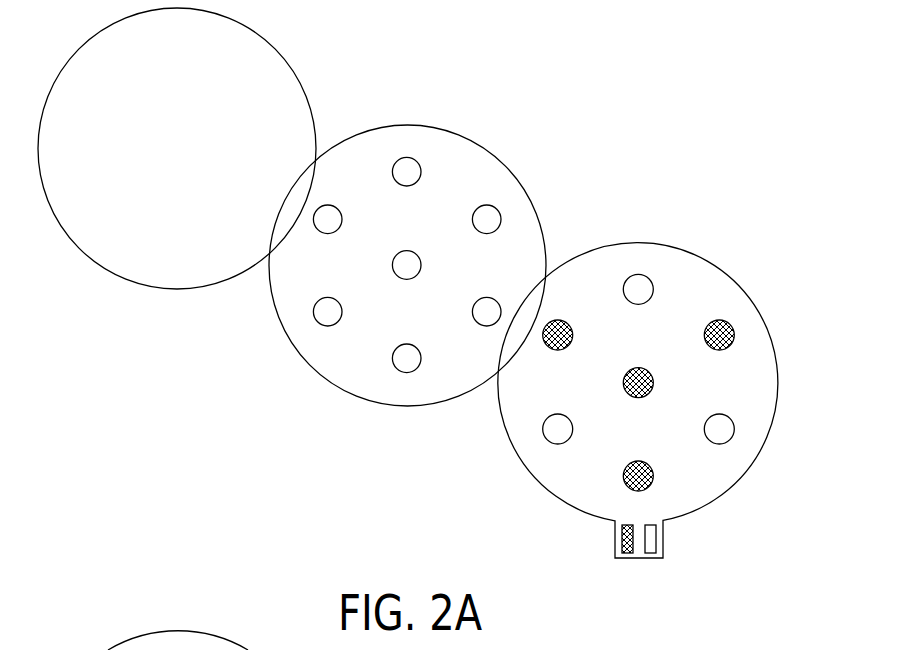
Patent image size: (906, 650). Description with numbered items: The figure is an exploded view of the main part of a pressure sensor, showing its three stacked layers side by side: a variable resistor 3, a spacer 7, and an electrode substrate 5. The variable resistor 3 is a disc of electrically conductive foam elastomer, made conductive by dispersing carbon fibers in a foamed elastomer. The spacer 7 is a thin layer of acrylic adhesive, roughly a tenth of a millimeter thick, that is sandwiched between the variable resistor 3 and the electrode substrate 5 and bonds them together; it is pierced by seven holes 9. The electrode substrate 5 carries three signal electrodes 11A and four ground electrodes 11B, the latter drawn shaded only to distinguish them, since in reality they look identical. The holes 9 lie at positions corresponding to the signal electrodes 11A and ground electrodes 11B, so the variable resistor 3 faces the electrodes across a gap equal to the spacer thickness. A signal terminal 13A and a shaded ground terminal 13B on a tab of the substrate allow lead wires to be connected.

The variable resistor 3 is at (121, 277).
The electrode substrate 5 is at (568, 505).
The spacer 7 is at (353, 396).
The holes 9 is at (407, 172).
The signal electrodes 11A is at (638, 289).
The ground electrodes 11B is at (732, 337).
The signal terminal 13A is at (651, 541).
The ground terminal 13B is at (624, 541).